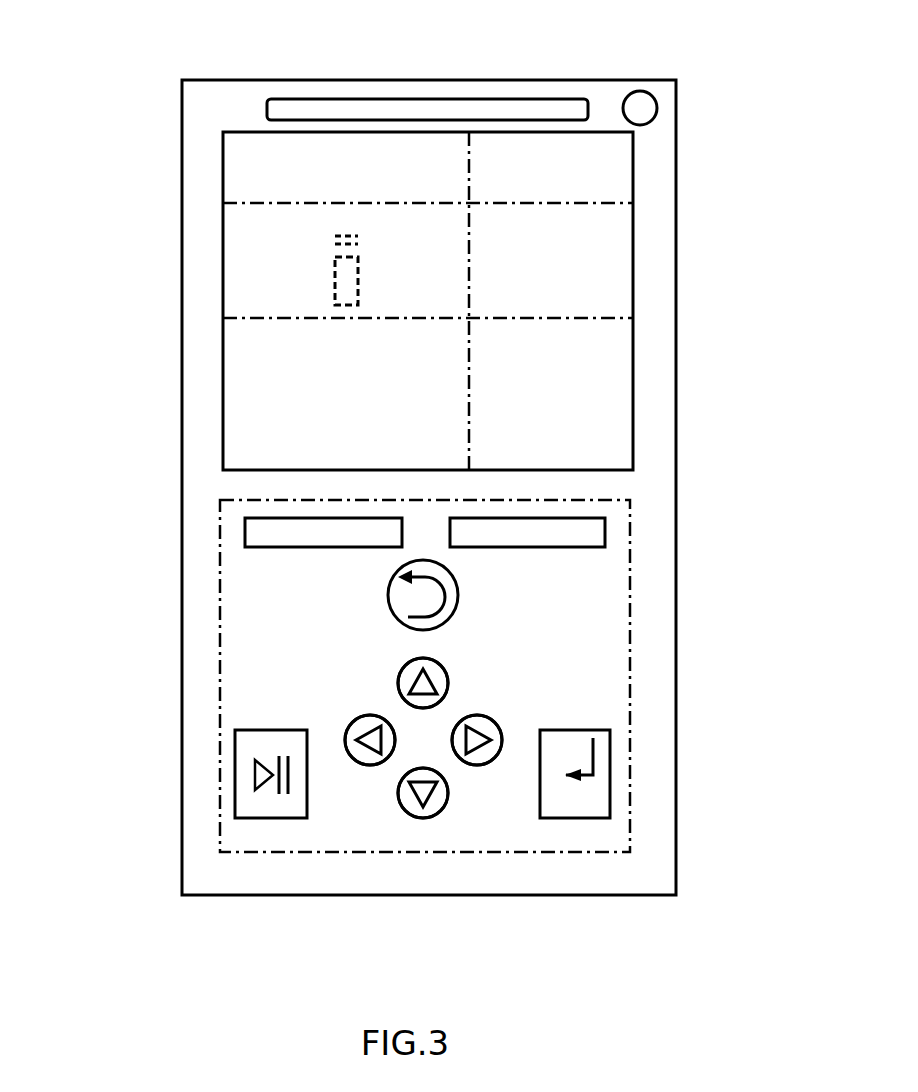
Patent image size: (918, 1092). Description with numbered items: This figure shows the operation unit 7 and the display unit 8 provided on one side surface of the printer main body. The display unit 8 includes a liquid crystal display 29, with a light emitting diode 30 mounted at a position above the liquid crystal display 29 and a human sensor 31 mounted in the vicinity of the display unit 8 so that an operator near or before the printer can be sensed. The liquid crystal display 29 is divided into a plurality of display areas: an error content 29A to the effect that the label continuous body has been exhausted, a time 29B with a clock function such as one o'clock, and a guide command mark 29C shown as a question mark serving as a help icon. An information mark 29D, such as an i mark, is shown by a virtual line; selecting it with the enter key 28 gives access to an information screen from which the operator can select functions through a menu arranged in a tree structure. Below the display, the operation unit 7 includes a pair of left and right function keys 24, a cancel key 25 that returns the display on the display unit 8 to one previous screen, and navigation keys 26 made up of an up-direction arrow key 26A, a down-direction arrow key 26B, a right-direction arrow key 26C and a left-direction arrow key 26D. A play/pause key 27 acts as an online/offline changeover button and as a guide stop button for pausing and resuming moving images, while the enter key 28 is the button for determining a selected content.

The operation unit 7 is at (210, 645).
The display unit 8 is at (218, 280).
The function keys 24 is at (350, 518).
The cancel key 25 is at (458, 585).
The navigation keys 26 is at (462, 692).
The up-direction arrow key 26A is at (407, 667).
The down-direction arrow key 26B is at (423, 818).
The right-direction arrow key 26C is at (488, 763).
The left-direction arrow key 26D is at (356, 763).
The play/pause key 27 is at (240, 750).
The enter key 28 is at (610, 755).
The liquid crystal display 29 is at (633, 245).
The error content 29A is at (258, 368).
The time 29B is at (608, 170).
The guide command mark 29C is at (602, 372).
The information mark 29D is at (318, 264).
The light emitting diode 30 is at (314, 104).
The human sensor 31 is at (639, 96).